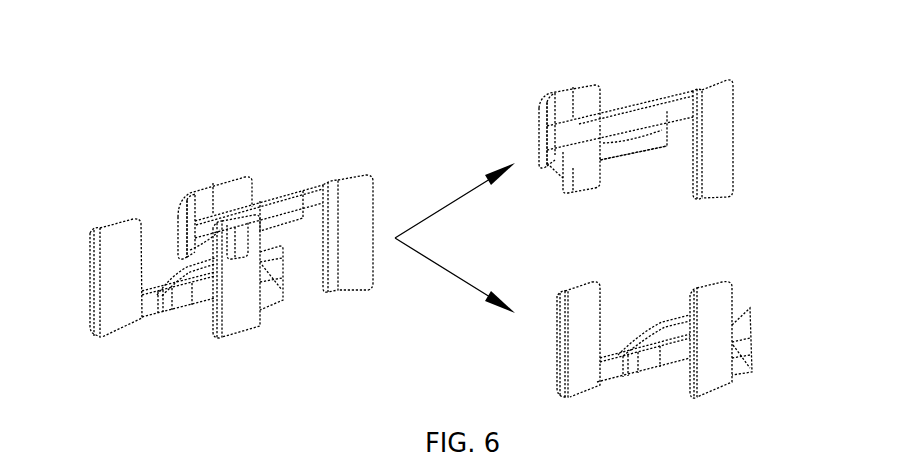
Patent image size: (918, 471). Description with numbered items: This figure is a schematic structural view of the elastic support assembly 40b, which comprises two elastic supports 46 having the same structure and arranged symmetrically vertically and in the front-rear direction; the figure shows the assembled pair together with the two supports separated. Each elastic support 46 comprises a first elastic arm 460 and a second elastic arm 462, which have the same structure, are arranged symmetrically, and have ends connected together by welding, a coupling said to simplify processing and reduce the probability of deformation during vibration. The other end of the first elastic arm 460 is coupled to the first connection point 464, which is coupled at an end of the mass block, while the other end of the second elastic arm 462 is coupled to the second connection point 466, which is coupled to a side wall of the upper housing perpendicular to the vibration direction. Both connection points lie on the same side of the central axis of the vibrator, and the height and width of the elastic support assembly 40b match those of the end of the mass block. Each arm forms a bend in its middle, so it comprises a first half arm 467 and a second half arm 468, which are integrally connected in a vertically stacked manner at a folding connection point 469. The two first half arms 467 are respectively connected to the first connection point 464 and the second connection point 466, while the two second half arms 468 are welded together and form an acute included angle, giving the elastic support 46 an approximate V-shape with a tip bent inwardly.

The elastic support assembly 40b is at (141, 149).
The elastic support 46 is at (769, 75).
The first elastic arm 460 is at (628, 183).
The second elastic arm 462 is at (514, 95).
The first connection point 464 is at (735, 139).
The second connection point 466 is at (590, 88).
The first half arm 467 is at (655, 106).
The second half arm 468 is at (637, 143).
The folding connection point 469 is at (590, 147).